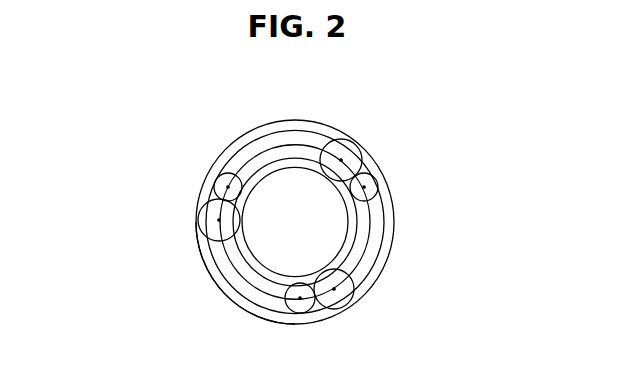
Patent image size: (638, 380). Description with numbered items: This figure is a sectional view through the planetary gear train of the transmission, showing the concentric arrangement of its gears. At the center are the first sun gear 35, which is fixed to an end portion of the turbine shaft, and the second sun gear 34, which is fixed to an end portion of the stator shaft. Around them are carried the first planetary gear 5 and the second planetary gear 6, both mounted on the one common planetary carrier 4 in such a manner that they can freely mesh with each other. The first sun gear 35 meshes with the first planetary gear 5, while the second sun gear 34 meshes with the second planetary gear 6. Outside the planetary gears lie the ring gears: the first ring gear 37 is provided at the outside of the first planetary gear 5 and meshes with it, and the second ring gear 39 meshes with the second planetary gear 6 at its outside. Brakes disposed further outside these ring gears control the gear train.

The planetary carrier 4 is at (375, 259).
The first planetary gear 5 is at (228, 173).
The second planetary gear 6 is at (216, 256).
The second sun gear 34 is at (238, 151).
The first sun gear 35 is at (229, 297).
The first ring gear 37 is at (267, 133).
The second ring gear 39 is at (218, 276).